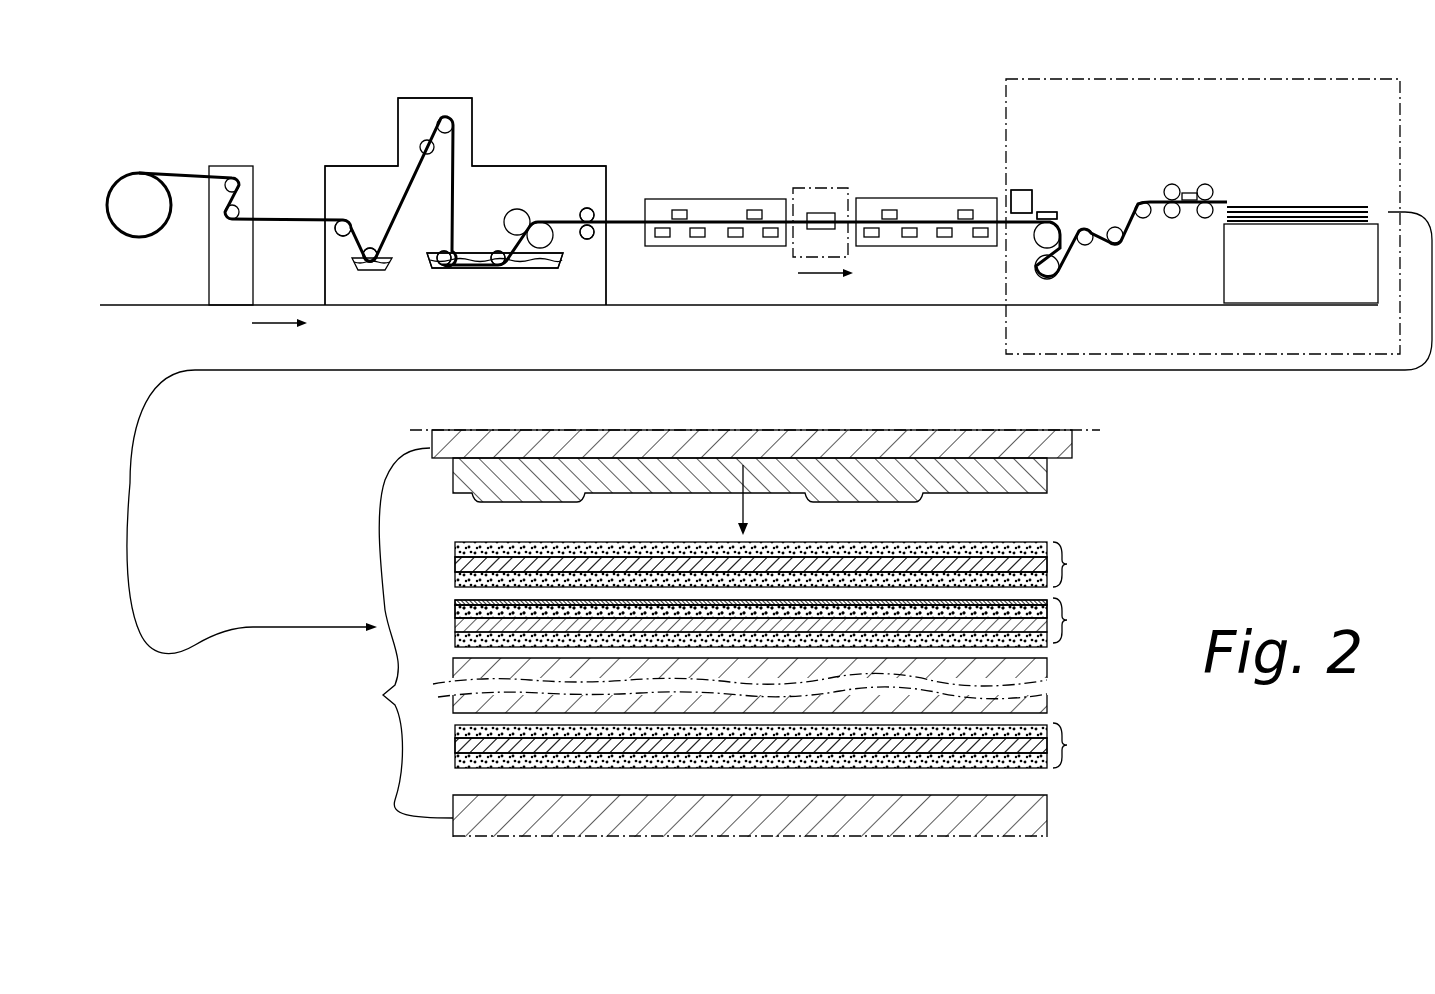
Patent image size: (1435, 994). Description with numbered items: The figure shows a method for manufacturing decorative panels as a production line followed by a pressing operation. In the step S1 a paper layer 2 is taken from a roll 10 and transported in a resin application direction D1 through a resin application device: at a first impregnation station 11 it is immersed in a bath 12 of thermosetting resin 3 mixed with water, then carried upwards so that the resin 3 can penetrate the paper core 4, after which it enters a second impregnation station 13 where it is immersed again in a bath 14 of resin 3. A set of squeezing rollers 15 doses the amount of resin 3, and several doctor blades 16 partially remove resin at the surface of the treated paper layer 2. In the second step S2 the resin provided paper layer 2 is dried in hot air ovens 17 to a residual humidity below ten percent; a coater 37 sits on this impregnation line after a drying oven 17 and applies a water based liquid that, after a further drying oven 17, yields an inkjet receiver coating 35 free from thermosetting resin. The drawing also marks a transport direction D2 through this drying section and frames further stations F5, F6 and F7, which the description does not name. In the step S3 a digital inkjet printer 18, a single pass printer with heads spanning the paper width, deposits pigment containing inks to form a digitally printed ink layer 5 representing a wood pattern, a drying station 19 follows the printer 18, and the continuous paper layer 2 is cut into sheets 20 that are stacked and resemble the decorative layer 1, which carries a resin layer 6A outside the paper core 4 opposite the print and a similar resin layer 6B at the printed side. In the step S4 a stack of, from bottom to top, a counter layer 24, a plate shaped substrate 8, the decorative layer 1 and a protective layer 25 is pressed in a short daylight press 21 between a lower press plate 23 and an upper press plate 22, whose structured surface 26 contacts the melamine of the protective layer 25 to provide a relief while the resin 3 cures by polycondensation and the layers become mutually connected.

The roll 10 is at (132, 193).
The paper core 4 is at (176, 175).
The first impregnation station 11 is at (356, 200).
The bath 12 is at (375, 228).
The doctor blades 16 is at (404, 208).
The second impregnation station 13 is at (477, 235).
The bath 14 is at (518, 266).
The squeezing rollers 15 is at (553, 200).
The thermosetting resin 3 is at (392, 262).
The hot air ovens 17 is at (692, 198).
The coater 37 is at (830, 213).
The digital inkjet printer 18 is at (1035, 192).
The digitally printed ink layer 5 is at (1045, 212).
The drying station 19 is at (1082, 222).
The decorative layer 1 is at (1153, 202).
The sheets 20 is at (1347, 220).
The upper press plate 22 is at (1002, 477).
The structured surface 26 is at (680, 515).
The protective layer 25 is at (1064, 562).
The paper layer 2 is at (458, 567).
The inkjet receiver coating 35 is at (547, 602).
The resin layer 6A is at (458, 642).
The resin layer 6B is at (867, 610).
The substrate 8 is at (1023, 702).
The counter layer 24 is at (1062, 743).
The lower press plate 23 is at (1012, 825).
The short daylight press 21 is at (402, 633).
The step of providing the paper layer with thermosetting resin S1 is at (545, 310).
The drying step S2 is at (682, 283).
The printing step S3 is at (1027, 292).
The pressing step S4 is at (1148, 807).
The station F5 is at (810, 188).
The station F6 is at (1040, 158).
The station F7 is at (1038, 79).
The resin application direction D1 is at (278, 337).
The direction D2 is at (825, 288).